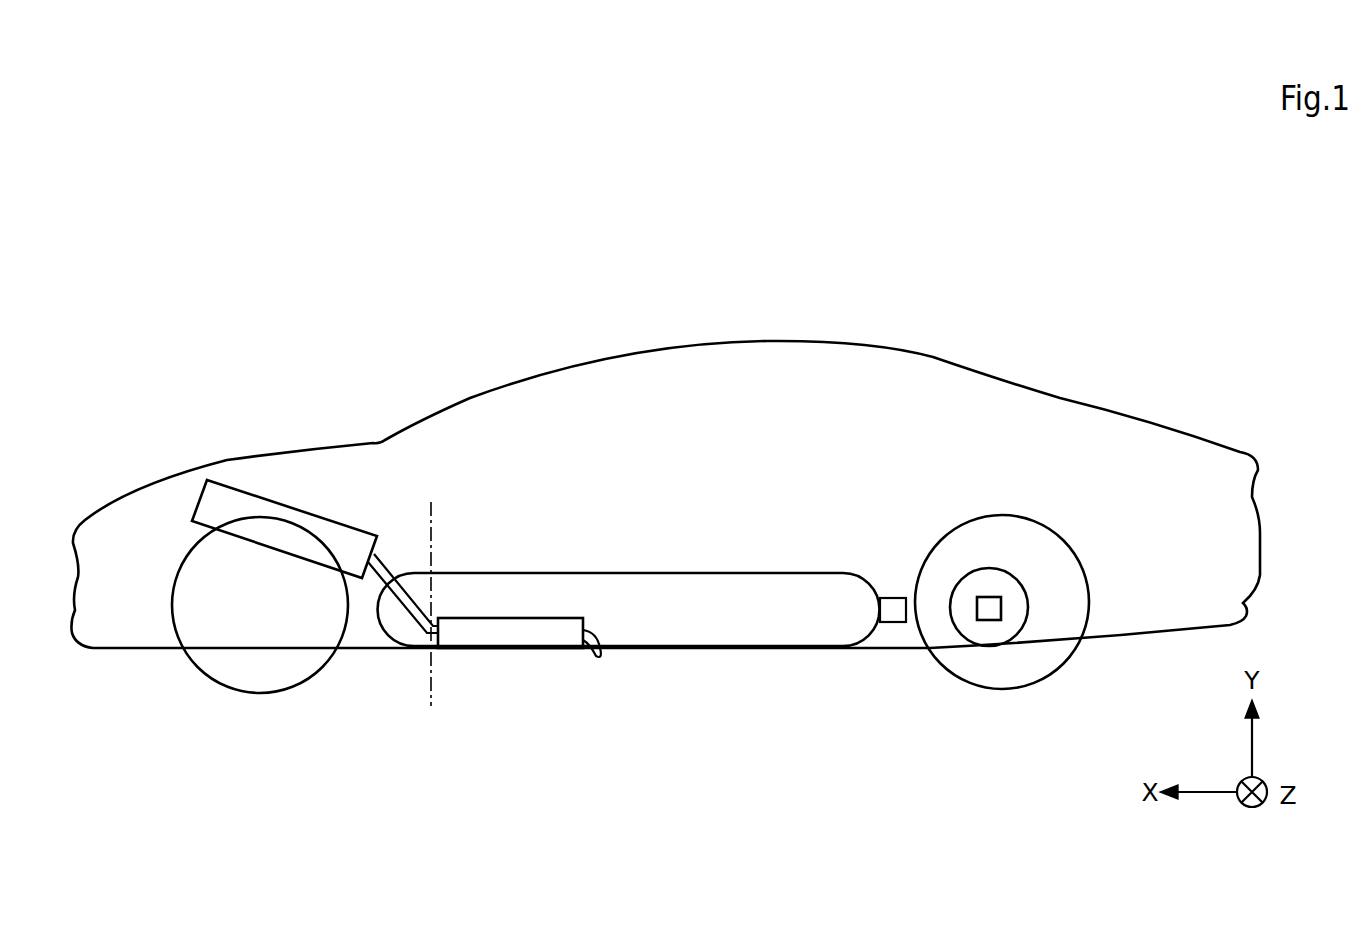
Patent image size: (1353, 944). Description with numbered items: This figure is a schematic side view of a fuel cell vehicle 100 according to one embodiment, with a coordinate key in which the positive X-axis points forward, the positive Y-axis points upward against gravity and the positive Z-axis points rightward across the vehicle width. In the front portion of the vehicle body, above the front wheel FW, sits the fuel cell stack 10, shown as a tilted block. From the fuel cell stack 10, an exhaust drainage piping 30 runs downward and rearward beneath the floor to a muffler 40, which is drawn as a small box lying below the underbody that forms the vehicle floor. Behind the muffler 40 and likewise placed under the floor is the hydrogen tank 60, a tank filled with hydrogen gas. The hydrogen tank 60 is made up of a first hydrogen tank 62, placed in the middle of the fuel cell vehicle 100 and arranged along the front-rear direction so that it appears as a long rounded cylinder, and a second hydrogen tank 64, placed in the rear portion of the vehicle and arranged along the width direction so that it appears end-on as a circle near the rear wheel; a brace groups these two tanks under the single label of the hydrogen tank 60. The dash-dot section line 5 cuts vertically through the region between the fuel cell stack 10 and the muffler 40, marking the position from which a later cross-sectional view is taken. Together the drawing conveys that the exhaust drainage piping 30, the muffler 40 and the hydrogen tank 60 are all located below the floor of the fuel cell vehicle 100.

The fuel cell vehicle 100 is at (955, 359).
The fuel cell stack 10 is at (260, 498).
The exhaust drainage piping 30 is at (398, 605).
The muffler 40 is at (533, 637).
The hydrogen tank 60 is at (703, 686).
The first hydrogen tank 62 is at (808, 633).
The second hydrogen tank 64 is at (962, 613).
The section line 5 is at (430, 703).
The front wheel FW is at (207, 675).